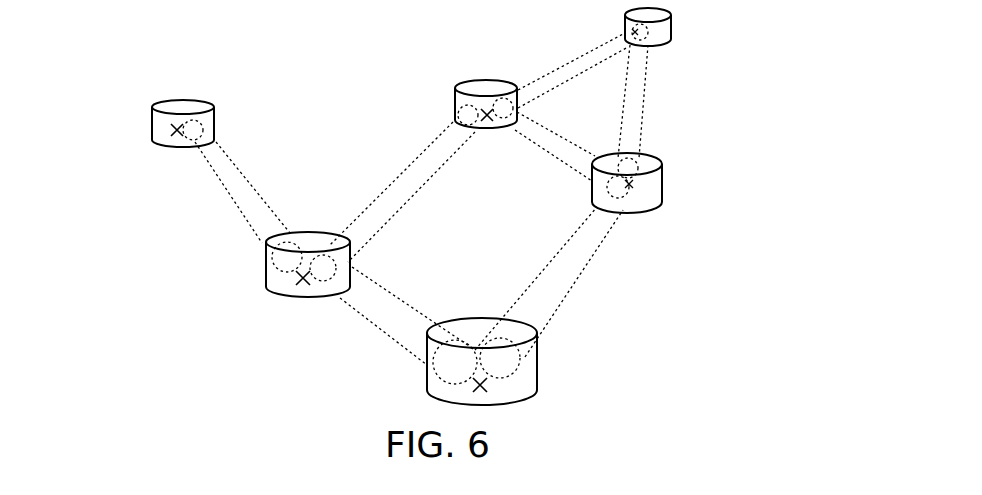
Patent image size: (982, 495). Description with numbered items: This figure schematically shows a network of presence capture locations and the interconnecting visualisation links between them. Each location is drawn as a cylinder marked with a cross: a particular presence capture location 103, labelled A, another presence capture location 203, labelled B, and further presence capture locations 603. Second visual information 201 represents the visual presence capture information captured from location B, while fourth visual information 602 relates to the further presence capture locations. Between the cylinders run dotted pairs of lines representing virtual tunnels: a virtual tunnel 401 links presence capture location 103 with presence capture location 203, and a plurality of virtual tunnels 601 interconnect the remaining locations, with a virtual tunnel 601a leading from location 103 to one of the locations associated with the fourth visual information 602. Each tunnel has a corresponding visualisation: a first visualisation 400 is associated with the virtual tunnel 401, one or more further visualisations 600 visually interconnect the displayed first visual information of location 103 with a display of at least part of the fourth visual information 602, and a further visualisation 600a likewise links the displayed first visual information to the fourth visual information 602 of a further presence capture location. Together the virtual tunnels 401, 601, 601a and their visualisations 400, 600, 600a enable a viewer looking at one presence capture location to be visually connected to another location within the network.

The second visual information 201 is at (183, 104).
The presence capture location 203 is at (178, 146).
The virtual tunnel 401 is at (235, 166).
The first visualisation 400 is at (290, 243).
The presence capture location 103 is at (300, 290).
The further visualisation 600 is at (345, 250).
The further visualisation 600a is at (333, 292).
The virtual tunnel 601 is at (425, 184).
The virtual tunnel 601a is at (370, 285).
The fourth visual information 602 is at (478, 328).
The presence capture location 603 is at (487, 392).